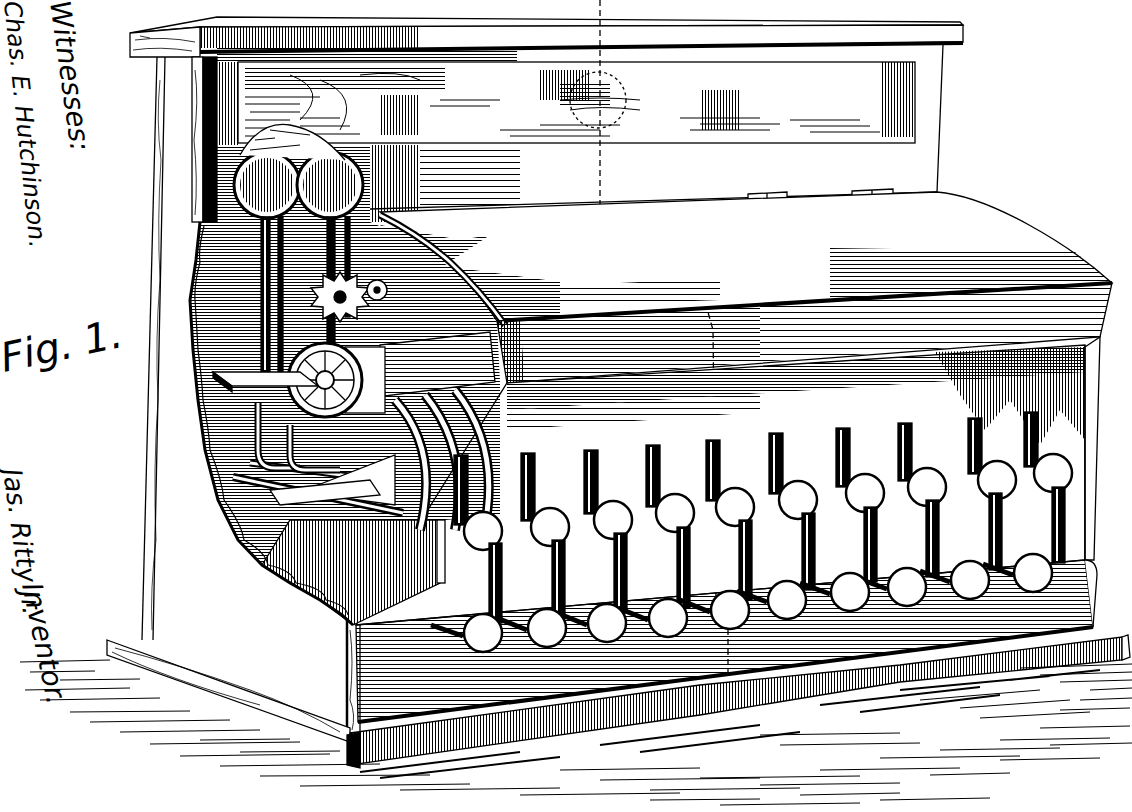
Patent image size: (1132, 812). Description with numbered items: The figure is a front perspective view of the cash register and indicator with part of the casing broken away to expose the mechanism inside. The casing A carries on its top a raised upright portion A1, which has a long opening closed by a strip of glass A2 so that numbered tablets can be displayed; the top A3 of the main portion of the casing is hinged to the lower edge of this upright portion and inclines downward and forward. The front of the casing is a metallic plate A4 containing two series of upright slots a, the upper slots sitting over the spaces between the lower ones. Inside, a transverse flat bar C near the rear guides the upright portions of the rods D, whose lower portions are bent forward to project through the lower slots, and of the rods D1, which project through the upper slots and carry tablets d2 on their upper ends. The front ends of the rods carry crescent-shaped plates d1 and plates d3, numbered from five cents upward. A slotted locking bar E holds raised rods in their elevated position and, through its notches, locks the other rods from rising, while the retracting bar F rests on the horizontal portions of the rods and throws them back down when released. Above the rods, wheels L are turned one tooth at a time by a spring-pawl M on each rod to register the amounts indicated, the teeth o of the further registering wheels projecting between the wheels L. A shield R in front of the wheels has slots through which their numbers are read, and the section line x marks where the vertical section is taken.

The casing A is at (566, 411).
The raised upright portion A1 is at (566, 406).
The strip of glass A2 is at (566, 406).
The top of the main portion of the casing A3 is at (746, 406).
The metallic front plate A4 is at (566, 406).
The transverse flat bar C is at (212, 378).
The rods D is at (291, 295).
The rods D1 is at (455, 630).
The plates d1 is at (508, 630).
The tablets d2 is at (566, 265).
The plates d3 is at (672, 500).
The locking bar E is at (566, 406).
The retracting rod or bar F is at (312, 461).
The wheels L is at (495, 385).
The spring-pawl M is at (495, 442).
The shield R is at (470, 255).
The upright slots a is at (1025, 445).
The teeth o is at (341, 301).
The section line x is at (808, 745).